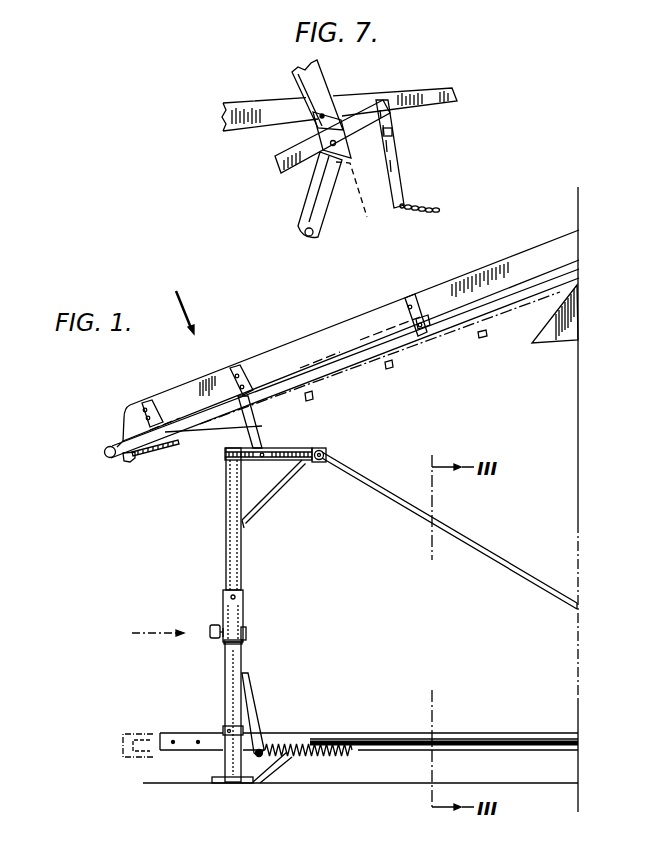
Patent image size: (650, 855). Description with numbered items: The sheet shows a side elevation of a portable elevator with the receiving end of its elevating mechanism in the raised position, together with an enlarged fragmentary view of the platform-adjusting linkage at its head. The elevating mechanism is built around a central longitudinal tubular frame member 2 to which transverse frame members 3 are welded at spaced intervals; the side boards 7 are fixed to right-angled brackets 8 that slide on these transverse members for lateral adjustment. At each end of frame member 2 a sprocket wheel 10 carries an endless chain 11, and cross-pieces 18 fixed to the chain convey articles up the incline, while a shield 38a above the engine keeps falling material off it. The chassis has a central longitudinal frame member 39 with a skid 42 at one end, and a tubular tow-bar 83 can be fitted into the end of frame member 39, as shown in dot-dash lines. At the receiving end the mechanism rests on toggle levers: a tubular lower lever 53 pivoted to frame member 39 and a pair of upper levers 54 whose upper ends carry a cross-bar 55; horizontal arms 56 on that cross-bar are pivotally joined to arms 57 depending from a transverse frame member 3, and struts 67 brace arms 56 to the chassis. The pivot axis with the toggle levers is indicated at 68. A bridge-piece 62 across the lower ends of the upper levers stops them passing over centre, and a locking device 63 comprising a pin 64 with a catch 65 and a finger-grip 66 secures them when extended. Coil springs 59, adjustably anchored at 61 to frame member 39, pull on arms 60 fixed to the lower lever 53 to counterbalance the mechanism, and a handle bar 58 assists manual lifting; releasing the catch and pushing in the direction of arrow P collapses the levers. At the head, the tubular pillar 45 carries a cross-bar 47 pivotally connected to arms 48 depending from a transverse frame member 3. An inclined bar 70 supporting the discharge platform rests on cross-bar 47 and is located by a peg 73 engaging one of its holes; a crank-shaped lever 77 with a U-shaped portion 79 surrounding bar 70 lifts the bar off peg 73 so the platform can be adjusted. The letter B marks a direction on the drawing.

In FIG. 7, the arms 48 is at (322, 95).
In FIG. 7, the inclined bar 70 is at (407, 103).
In FIG. 7, the U-shaped portion 79 is at (389, 132).
In FIG. 7, the crank-shaped lever 77 is at (397, 177).
In FIG. 7, the cross-bar 47 is at (327, 157).
In FIG. 7, the tubular pillar 45 is at (302, 220).
In FIG. 7, the peg 73 is at (357, 201).
In FIG. 1, the side boards 7 is at (547, 255).
In FIG. 1, the central longitudinal tubular frame member 2 is at (462, 313).
In FIG. 1, the handle bar 58 is at (107, 446).
In FIG. 1, the sprocket wheel 10 is at (130, 463).
In FIG. 1, the endless chain 11 is at (165, 452).
In FIG. 1, the right-angled brackets 8 is at (407, 299).
In FIG. 1, the transverse frame members 3 is at (423, 335).
In FIG. 1, the cross-pieces 18 is at (311, 399).
In FIG. 1, the shield 38a is at (560, 341).
In FIG. 1, the arms 57 is at (222, 425).
In FIG. 1, the cross-bar 55 is at (226, 462).
In FIG. 1, the axis of pivotal connection with toggle levers 68 is at (258, 460).
In FIG. 1, the horizontal arms 56 is at (298, 462).
In FIG. 1, the struts 67 is at (497, 562).
In FIG. 1, the upper levers 54 is at (243, 567).
In FIG. 1, the pin 64 is at (244, 620).
In FIG. 1, the locking device 63 is at (223, 629).
In FIG. 1, the finger-grip 66 is at (212, 636).
In FIG. 1, the catch 65 is at (247, 632).
In FIG. 1, the bridge-piece 62 is at (244, 642).
In FIG. 1, the lower lever 53 is at (243, 665).
In FIG. 1, the central longitudinal frame member 39 is at (532, 731).
In FIG. 1, the anchorage 61 is at (408, 748).
In FIG. 1, the coil springs 59 is at (345, 743).
In FIG. 1, the arms 60 is at (248, 727).
In FIG. 1, the skid 42 is at (272, 771).
In FIG. 1, the tubular tow-bar 83 is at (150, 733).
In FIG. 1, the direction arrow B is at (182, 300).
In FIG. 1, the arrow P is at (148, 639).